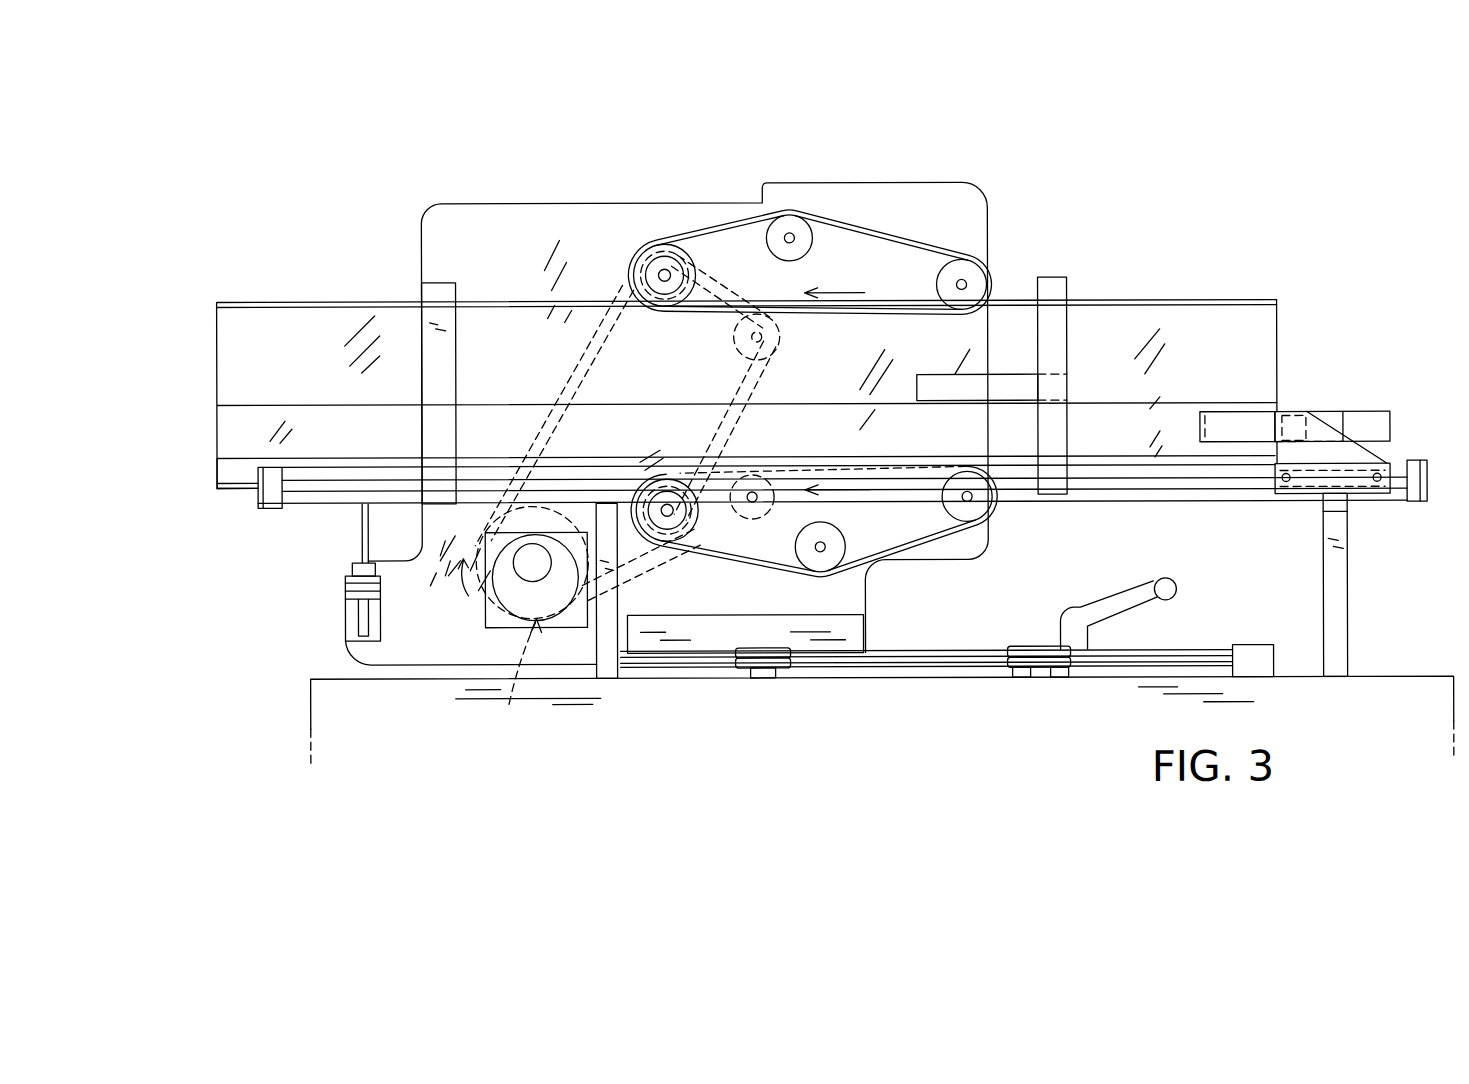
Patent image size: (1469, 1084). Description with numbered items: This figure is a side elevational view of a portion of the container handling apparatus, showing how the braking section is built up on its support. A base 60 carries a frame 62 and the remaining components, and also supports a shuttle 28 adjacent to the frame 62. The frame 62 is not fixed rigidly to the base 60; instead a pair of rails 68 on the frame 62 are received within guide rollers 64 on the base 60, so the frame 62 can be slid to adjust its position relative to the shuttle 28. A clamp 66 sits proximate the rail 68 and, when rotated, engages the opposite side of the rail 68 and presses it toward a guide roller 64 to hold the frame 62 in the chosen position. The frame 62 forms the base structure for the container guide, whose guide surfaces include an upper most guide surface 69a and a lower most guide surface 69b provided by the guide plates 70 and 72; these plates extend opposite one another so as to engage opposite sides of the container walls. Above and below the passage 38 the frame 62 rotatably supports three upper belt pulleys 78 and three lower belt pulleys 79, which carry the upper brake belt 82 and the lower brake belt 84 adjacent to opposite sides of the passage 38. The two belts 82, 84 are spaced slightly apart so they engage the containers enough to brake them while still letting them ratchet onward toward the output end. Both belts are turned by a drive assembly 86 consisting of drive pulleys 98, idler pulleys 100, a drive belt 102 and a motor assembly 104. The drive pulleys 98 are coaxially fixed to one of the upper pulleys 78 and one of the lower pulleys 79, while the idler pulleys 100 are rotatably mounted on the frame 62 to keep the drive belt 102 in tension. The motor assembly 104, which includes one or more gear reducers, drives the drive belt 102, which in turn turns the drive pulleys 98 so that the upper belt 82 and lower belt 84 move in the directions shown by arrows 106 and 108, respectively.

The shuttle 28 is at (1367, 410).
The passage 38 is at (1163, 353).
The base 60 is at (1403, 677).
The frame 62 is at (985, 200).
The guide rollers 64 is at (773, 670).
The clamp 66 is at (1083, 608).
The rails 68 is at (1003, 647).
The upper most guide surface 69a is at (1006, 305).
The lower most guide surface 69b is at (237, 482).
The lower guide plate 70 is at (252, 490).
The upper guide plate 72 is at (302, 301).
The upper belt pulleys 78 is at (655, 247).
The lower belt pulleys 79 is at (985, 517).
The upper brake belt 82 is at (867, 227).
The lower brake belt 84 is at (742, 562).
The drive assembly 86 is at (517, 676).
The drive pulleys 98 is at (678, 258).
The idler pulleys 100 is at (729, 355).
The drive belt 102 is at (568, 368).
The motor assembly 104 is at (510, 590).
The arrow 106 is at (855, 293).
The arrow 108 is at (848, 495).